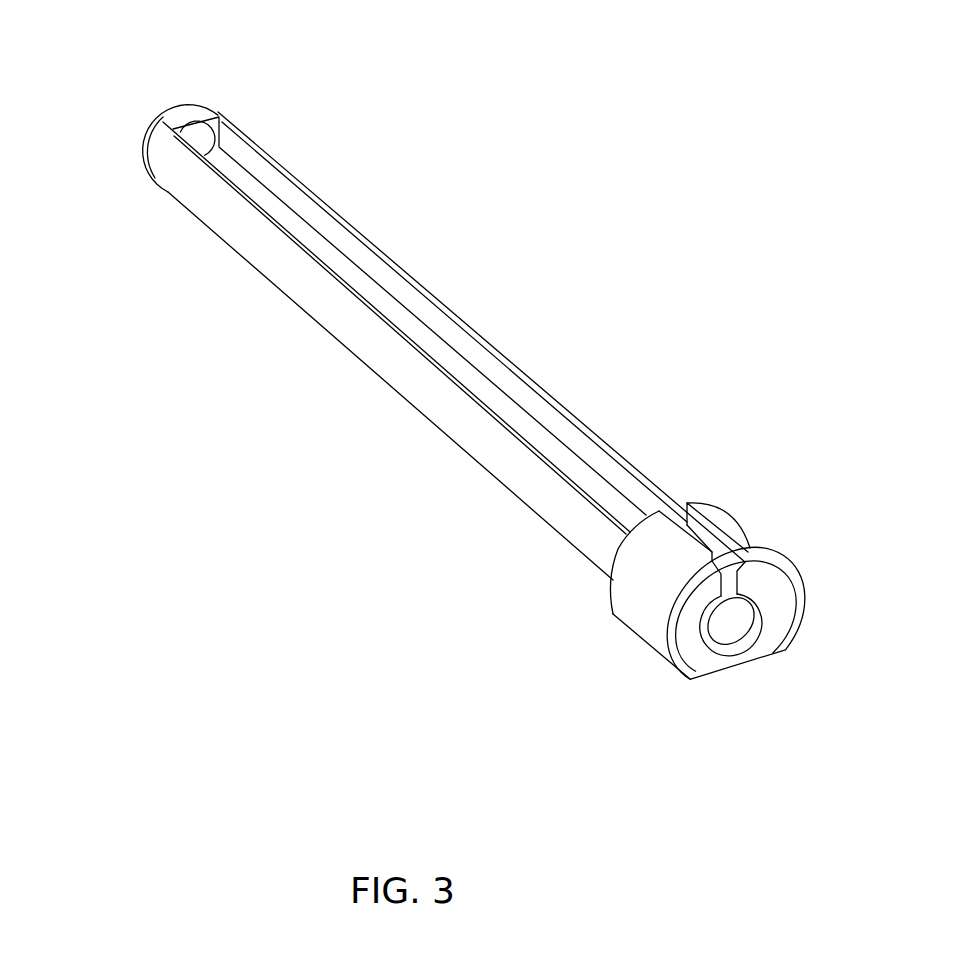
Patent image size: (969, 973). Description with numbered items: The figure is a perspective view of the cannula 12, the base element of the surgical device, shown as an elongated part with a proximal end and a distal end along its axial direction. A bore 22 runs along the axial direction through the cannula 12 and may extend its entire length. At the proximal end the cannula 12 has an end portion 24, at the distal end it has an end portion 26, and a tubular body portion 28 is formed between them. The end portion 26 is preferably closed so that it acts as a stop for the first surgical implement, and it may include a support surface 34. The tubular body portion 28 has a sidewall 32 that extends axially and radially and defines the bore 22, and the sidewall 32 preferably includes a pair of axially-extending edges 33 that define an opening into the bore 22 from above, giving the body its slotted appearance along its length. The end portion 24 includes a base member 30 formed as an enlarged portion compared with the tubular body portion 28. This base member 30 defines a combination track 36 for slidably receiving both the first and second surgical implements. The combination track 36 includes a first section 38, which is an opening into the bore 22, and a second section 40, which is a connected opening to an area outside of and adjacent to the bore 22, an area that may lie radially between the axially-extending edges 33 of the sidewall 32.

The cannula 12 is at (388, 152).
The bore 22 is at (398, 300).
The end portion 24 is at (630, 672).
The end portion 26 is at (139, 97).
The tubular body portion 28 is at (259, 314).
The base member 30 is at (748, 532).
The sidewall 32 is at (408, 373).
The axially-extending edges 33 is at (510, 435).
The support surface 34 is at (190, 112).
The combination track 36 is at (738, 612).
The first section 38 is at (715, 632).
The second section 40 is at (750, 560).